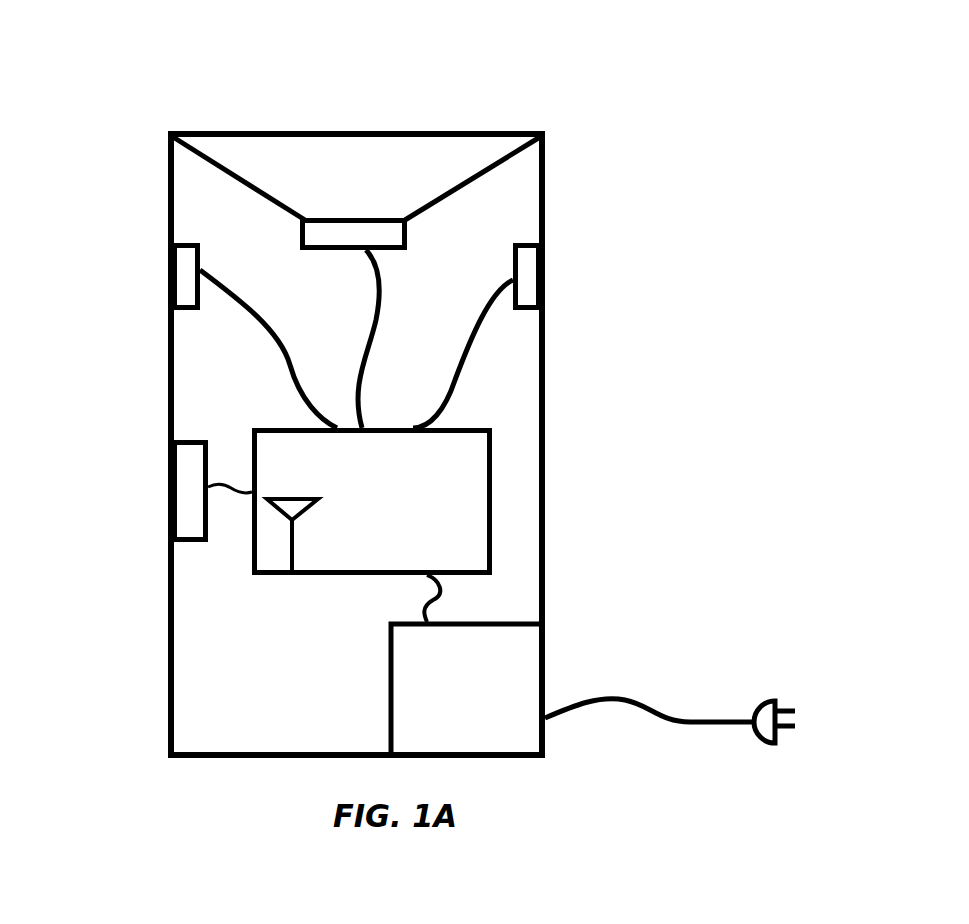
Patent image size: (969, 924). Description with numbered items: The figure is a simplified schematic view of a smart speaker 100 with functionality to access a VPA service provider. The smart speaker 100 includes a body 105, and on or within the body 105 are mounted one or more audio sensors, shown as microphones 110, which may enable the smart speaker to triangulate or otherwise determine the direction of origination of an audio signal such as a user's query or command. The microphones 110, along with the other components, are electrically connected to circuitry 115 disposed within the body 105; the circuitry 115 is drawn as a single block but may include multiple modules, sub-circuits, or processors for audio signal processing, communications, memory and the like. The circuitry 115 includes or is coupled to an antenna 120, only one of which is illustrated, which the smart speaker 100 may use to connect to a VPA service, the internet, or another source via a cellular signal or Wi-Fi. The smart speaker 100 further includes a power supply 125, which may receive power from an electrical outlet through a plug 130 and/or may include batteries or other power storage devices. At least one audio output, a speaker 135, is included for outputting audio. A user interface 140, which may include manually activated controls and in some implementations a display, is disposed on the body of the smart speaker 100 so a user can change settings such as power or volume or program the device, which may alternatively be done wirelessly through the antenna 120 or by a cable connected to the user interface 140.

The smart speaker 100 is at (590, 191).
The body 105 is at (170, 197).
The microphones 110 is at (175, 287).
The circuitry 115 is at (458, 512).
The antenna 120 is at (286, 510).
The power supply 125 is at (512, 672).
The plug 130 is at (770, 700).
The speaker 135 is at (305, 150).
The user interface 140 is at (178, 472).